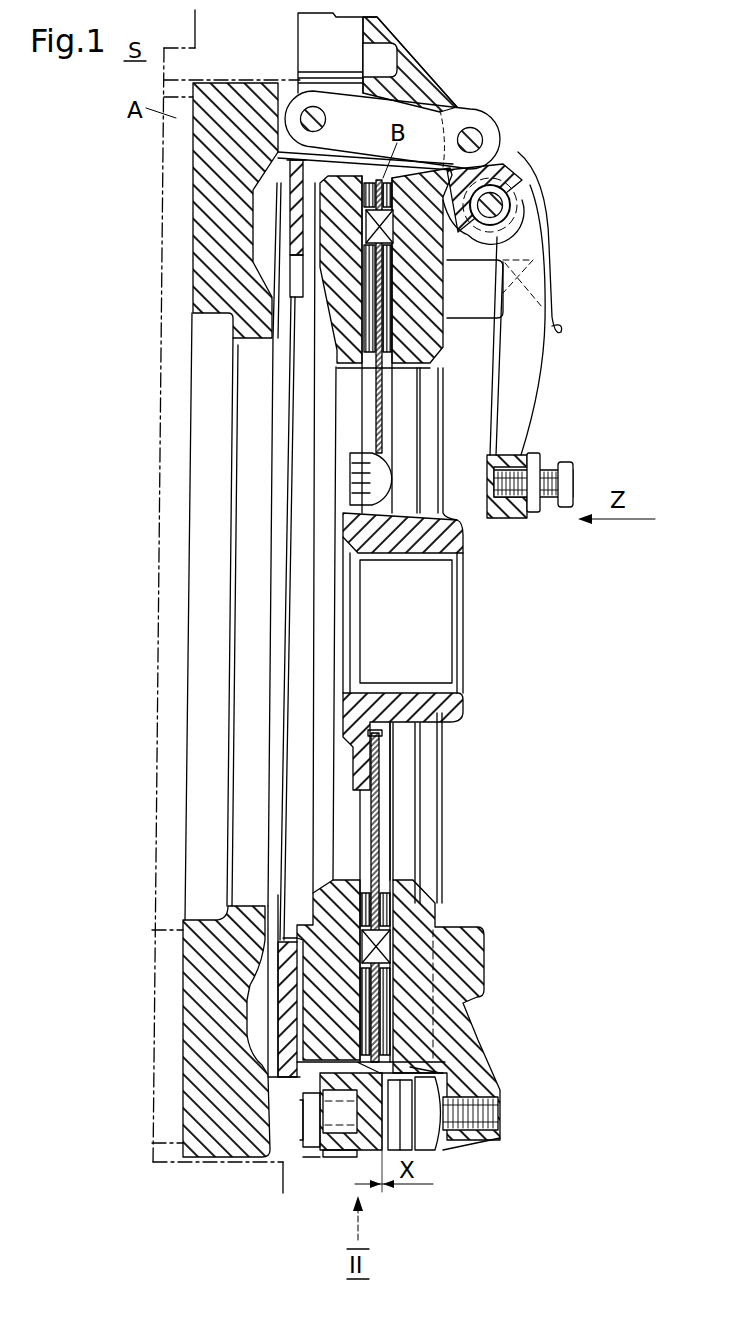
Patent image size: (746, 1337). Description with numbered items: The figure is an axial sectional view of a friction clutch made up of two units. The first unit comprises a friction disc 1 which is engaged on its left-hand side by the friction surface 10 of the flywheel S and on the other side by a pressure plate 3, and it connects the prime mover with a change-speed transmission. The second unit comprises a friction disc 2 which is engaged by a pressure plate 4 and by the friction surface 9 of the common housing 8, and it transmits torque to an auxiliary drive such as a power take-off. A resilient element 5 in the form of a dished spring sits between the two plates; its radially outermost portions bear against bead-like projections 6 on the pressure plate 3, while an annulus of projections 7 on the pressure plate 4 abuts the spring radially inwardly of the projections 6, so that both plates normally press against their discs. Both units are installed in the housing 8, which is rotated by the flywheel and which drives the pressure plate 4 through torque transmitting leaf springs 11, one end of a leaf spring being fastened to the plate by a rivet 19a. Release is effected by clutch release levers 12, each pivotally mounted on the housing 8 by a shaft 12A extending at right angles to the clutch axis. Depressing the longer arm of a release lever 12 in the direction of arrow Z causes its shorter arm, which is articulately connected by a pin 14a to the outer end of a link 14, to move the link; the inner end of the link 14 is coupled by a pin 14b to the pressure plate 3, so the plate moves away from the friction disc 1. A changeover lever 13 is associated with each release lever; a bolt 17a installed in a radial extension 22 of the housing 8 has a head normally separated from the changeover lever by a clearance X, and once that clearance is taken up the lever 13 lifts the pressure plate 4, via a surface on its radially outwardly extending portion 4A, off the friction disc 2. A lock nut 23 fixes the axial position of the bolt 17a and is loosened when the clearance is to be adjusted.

The friction disc 1 is at (171, 162).
The friction disc 2 is at (405, 176).
The pressure plate 3 is at (215, 252).
The pressure plate 4 is at (333, 352).
The radially outwardly extending portion 4A is at (303, 1160).
The resilient element 5 is at (220, 618).
The bead-like projections 6 is at (300, 166).
The annulus of projections 7 is at (292, 316).
The housing 8 is at (315, 42).
The friction surface 9 is at (384, 907).
The friction surface 10 is at (161, 233).
The leaf springs 11 is at (303, 1118).
The clutch release lever 12 is at (508, 446).
The shaft 12A is at (504, 207).
The changeover lever 13 is at (350, 1150).
The link 14 is at (427, 96).
The pin 14a is at (483, 142).
The pin 14b is at (326, 117).
The screw or bolt 17a is at (497, 1088).
The rivet 19a is at (297, 1098).
The radial extension 22 is at (500, 1138).
The lock nut 23 is at (447, 1147).